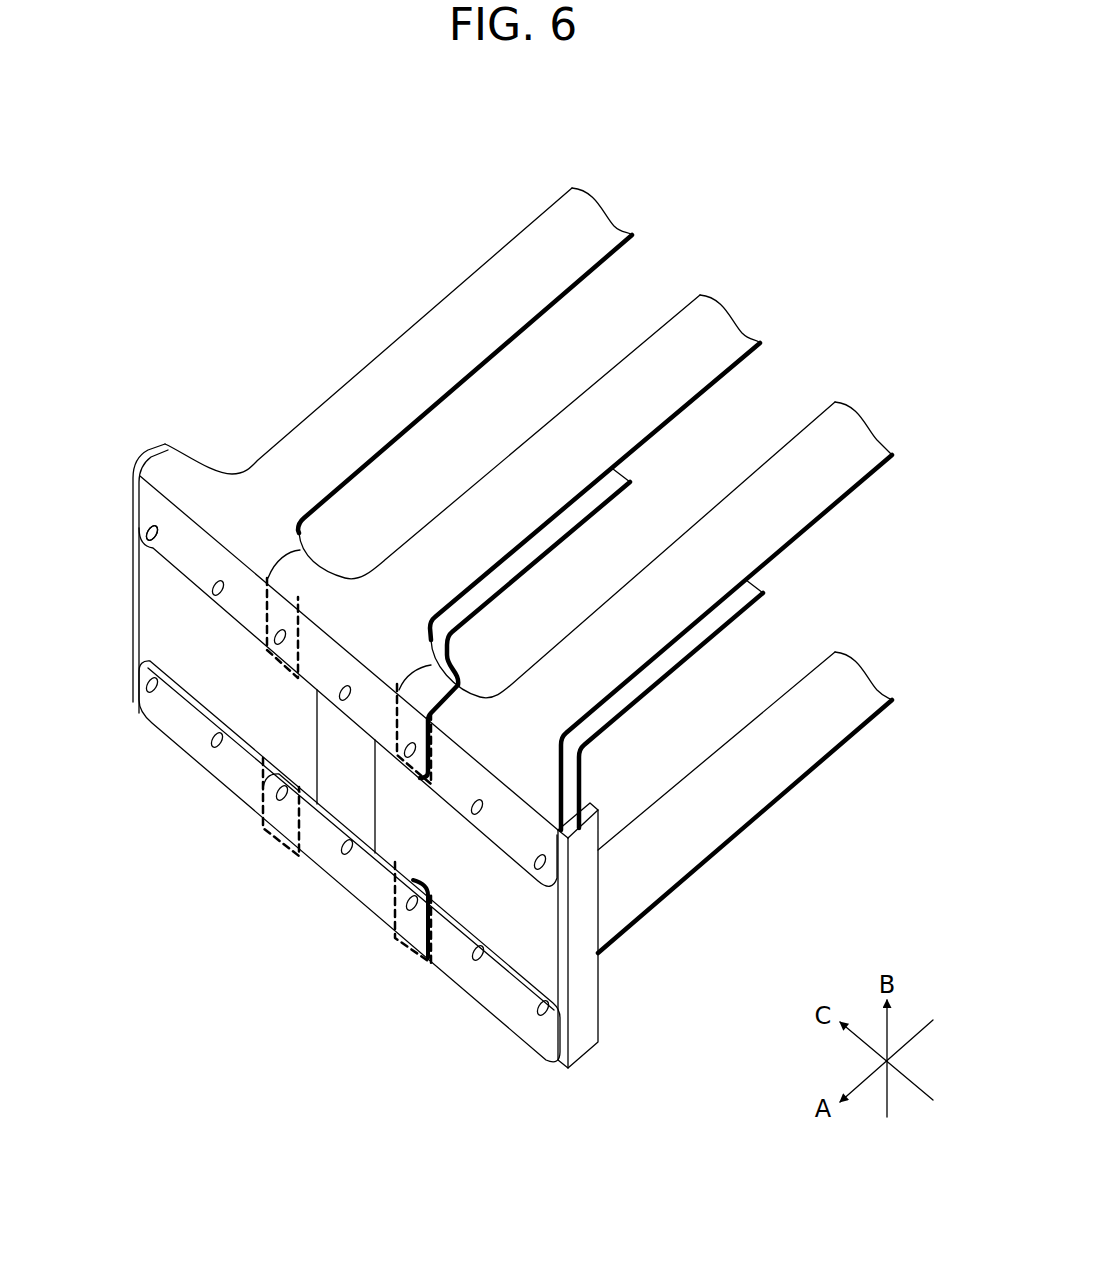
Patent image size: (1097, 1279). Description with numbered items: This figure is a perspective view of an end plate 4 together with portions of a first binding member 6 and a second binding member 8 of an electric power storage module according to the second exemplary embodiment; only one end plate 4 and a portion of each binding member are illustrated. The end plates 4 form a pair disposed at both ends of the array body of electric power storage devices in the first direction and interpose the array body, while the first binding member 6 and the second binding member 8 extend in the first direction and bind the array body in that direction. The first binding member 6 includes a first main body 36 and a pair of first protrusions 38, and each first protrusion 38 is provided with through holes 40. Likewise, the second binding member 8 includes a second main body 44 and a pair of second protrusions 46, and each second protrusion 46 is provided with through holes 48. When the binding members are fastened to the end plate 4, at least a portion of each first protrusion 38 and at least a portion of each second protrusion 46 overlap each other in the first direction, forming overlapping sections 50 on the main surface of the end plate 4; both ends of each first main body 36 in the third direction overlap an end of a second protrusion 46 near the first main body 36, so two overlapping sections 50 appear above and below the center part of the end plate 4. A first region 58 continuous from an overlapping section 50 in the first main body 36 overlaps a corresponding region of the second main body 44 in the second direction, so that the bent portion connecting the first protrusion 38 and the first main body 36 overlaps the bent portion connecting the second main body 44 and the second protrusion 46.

The end plate 4 is at (598, 1040).
The first binding member 6 is at (732, 299).
The second binding member 8 is at (605, 205).
The first main body 36 is at (577, 430).
The first protrusion 38 is at (332, 670).
The through hole 40 is at (283, 628).
The second main body 44 is at (463, 303).
The second protrusion 46 is at (180, 530).
The through hole 48 is at (152, 525).
The overlapping section 50 is at (263, 620).
The first region 58 is at (280, 563).